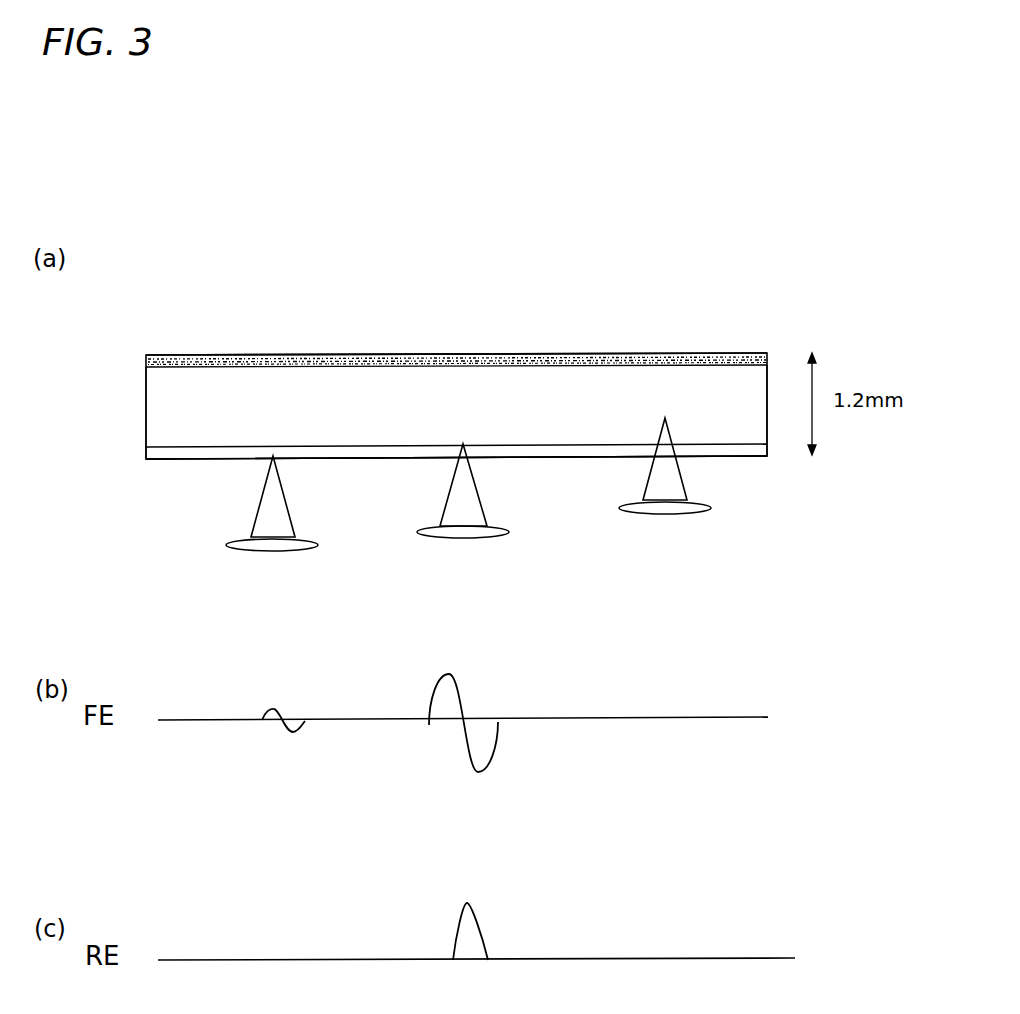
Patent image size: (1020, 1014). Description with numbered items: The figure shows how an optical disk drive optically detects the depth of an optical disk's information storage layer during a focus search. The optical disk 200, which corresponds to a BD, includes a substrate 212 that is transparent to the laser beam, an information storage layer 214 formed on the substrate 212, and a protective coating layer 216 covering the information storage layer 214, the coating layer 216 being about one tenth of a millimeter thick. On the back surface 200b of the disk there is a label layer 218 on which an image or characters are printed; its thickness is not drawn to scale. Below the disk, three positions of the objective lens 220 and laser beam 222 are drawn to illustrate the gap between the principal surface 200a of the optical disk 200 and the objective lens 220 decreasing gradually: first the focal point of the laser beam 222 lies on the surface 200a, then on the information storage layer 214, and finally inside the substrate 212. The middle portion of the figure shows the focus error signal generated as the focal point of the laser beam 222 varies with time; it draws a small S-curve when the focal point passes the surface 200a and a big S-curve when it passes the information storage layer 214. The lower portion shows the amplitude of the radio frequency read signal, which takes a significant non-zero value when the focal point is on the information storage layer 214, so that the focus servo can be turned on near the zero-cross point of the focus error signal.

The optical disk 200 is at (725, 322).
The principal surface 200a is at (195, 462).
The back surface 200b is at (213, 355).
The substrate 212 is at (146, 402).
The information storage layer 214 is at (138, 447).
The protective layer (coating layer) 216 is at (146, 459).
The label layer 218 is at (146, 356).
The objective lens 220 is at (697, 512).
The laser beam 222 is at (677, 478).